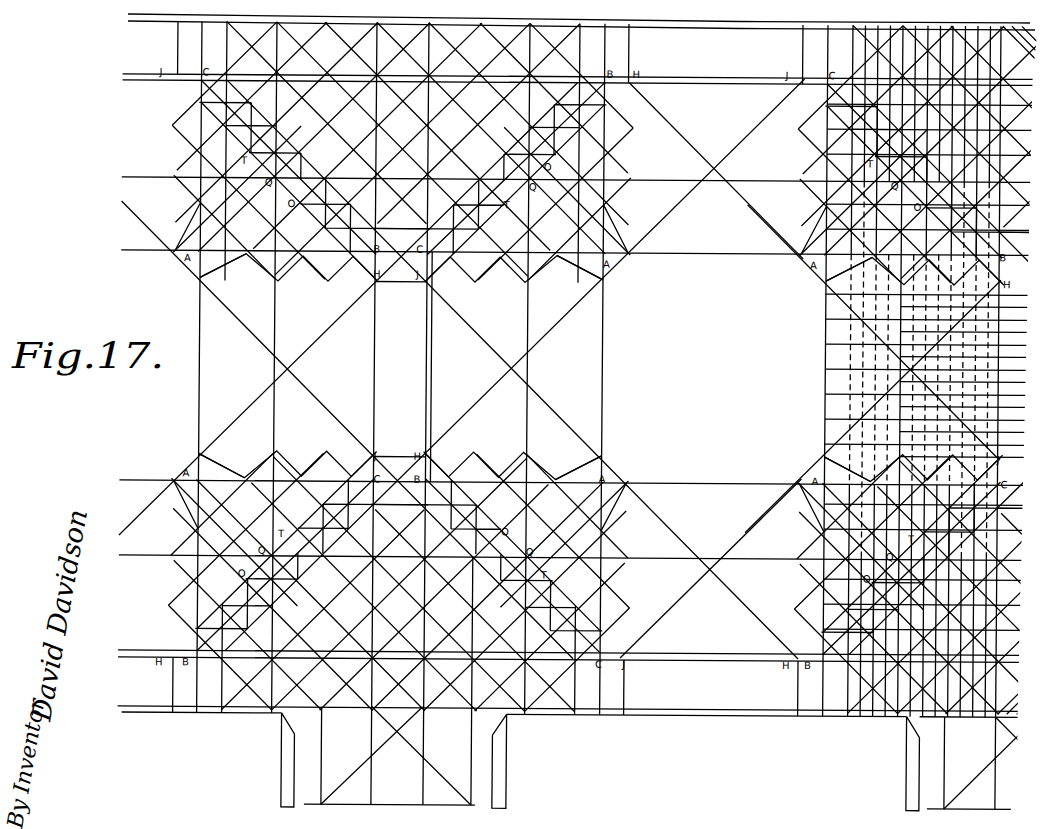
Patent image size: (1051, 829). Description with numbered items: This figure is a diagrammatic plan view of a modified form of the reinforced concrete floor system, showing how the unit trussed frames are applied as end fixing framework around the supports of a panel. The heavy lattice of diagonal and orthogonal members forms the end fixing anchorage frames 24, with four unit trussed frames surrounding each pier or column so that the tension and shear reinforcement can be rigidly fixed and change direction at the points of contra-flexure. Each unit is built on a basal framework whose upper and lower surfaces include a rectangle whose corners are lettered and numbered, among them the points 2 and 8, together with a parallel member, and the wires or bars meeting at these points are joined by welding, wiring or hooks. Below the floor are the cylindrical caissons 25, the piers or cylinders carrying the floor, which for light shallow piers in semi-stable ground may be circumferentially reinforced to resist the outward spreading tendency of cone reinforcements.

The end fixing anchorage frame 24 is at (692, 530).
The cylindrical caisson 25 is at (922, 757).
The rectangle corner point 2 is at (523, 372).
The rectangle corner point 8 is at (537, 371).